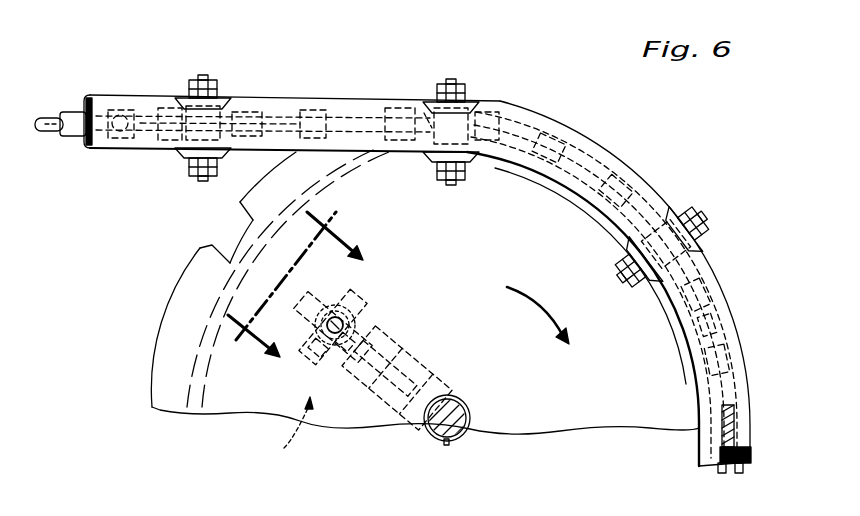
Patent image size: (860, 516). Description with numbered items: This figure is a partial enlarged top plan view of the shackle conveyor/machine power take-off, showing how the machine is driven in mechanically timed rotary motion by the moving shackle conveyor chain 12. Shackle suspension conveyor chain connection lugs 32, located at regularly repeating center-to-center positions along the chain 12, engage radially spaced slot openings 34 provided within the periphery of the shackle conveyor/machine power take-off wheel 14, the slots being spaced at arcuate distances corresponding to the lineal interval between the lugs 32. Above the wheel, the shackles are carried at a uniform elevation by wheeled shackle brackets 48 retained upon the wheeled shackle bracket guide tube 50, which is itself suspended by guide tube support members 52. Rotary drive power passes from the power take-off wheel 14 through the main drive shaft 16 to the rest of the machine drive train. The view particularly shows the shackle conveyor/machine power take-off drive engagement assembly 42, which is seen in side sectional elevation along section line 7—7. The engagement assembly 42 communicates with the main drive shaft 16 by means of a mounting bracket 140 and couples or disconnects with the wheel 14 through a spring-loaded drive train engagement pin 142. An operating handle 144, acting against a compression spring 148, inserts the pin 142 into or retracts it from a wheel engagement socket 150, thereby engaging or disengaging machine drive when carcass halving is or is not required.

The shackle conveyor chain 12 is at (578, 152).
The shackle conveyor/machine power take-off wheel 14 is at (166, 317).
The main drive shaft 16 is at (462, 406).
The shackle suspension conveyor chain connection lug 32 is at (229, 108).
The slot openings 34 is at (426, 113).
The shackle conveyor/machine power take-off drive engagement assembly 42 is at (284, 432).
The wheeled shackle bracket 48 is at (208, 76).
The wheeled shackle bracket guide tube 50 is at (314, 99).
The guide tube support members 52 is at (738, 447).
The mounting bracket 140 is at (396, 346).
The spring-loaded shackle conveyor/machine power take-off drive train engagement pin 142 is at (341, 318).
The operating handle 144 is at (358, 314).
The compression spring 148 is at (322, 350).
The wheel engagement socket 150 is at (336, 333).
The section line 7- 7 is at (295, 294).